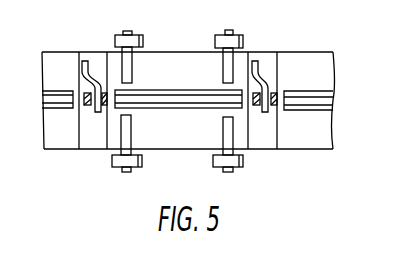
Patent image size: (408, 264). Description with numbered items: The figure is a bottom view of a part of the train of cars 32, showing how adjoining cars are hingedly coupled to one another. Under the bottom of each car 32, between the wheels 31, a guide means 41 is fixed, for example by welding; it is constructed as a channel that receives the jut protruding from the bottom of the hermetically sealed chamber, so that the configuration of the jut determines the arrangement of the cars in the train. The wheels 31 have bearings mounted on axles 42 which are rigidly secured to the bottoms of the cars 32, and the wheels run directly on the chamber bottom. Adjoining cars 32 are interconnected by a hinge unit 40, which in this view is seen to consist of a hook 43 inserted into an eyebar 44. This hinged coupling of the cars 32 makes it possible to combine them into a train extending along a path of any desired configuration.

The wheel 31 is at (216, 42).
The car 32 is at (175, 138).
The hinge unit 40 is at (76, 115).
The guide means 41 is at (151, 99).
The axle 42 is at (230, 62).
The hook 43 is at (88, 92).
The eyebar 44 is at (102, 90).